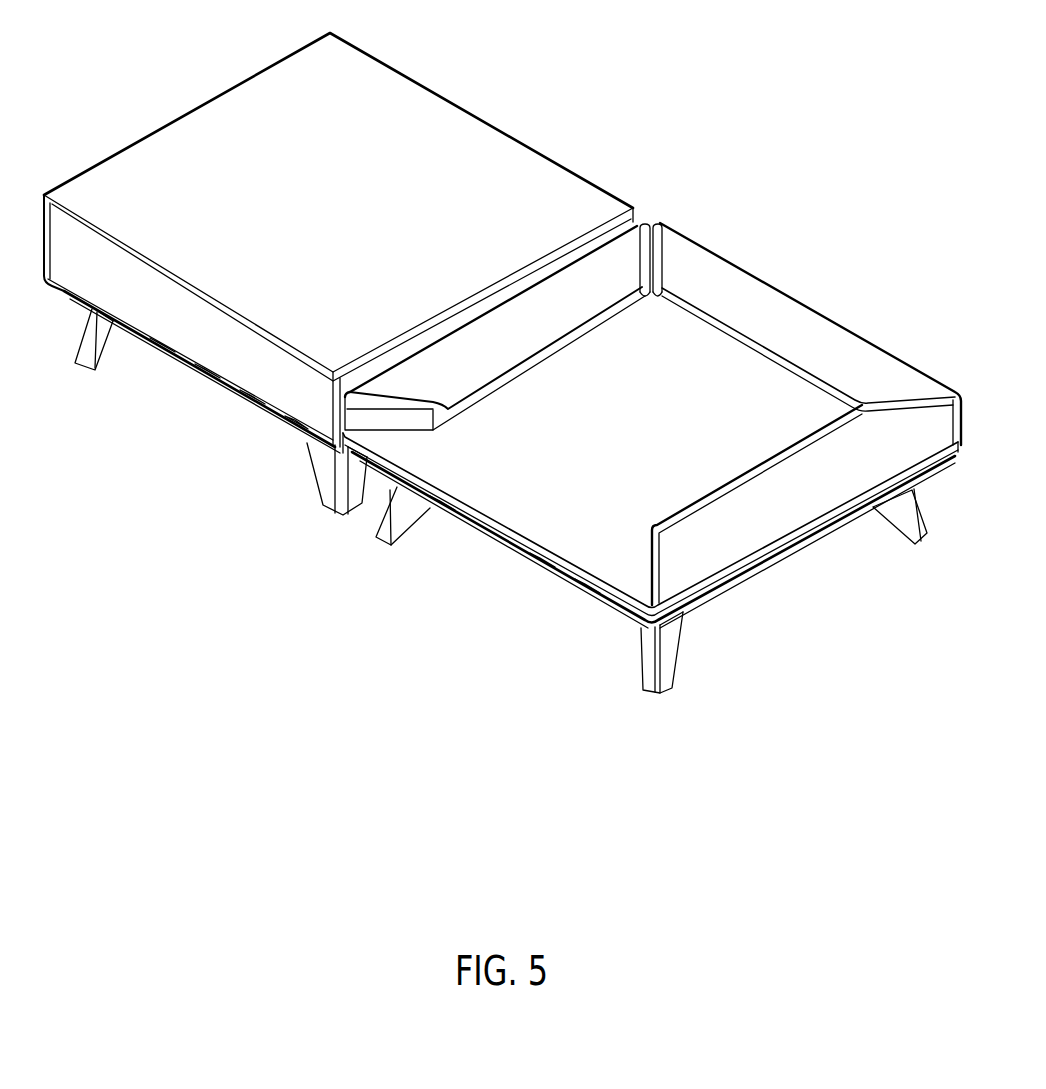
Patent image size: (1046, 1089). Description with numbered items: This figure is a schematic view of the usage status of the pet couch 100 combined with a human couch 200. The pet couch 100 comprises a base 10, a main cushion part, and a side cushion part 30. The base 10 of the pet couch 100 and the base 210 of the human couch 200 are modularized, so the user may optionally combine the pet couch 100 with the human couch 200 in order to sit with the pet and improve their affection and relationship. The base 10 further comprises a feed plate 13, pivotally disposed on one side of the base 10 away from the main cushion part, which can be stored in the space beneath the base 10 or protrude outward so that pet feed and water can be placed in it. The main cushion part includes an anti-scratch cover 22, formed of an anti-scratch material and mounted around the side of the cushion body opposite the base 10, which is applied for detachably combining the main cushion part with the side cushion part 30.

The human couch 200 is at (338, 265).
The pet couch 100 is at (652, 461).
The base 210 is at (204, 373).
The anti-scratch cover 22 is at (490, 497).
The base 10 is at (522, 557).
The side cushion part 30 is at (668, 549).
The feed plate 13 is at (762, 577).